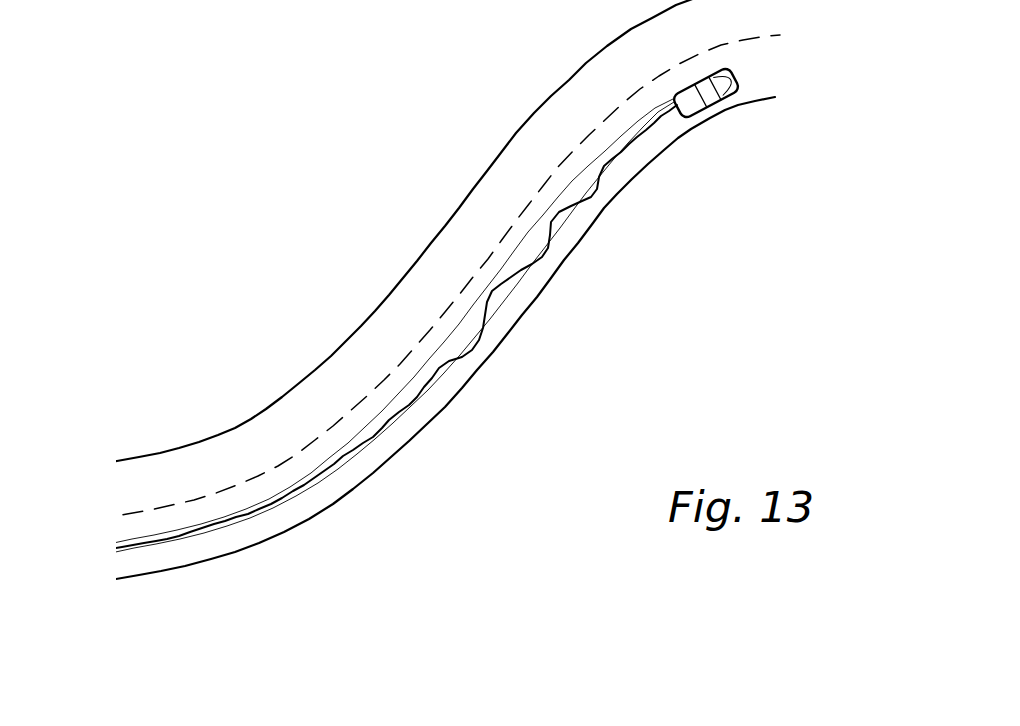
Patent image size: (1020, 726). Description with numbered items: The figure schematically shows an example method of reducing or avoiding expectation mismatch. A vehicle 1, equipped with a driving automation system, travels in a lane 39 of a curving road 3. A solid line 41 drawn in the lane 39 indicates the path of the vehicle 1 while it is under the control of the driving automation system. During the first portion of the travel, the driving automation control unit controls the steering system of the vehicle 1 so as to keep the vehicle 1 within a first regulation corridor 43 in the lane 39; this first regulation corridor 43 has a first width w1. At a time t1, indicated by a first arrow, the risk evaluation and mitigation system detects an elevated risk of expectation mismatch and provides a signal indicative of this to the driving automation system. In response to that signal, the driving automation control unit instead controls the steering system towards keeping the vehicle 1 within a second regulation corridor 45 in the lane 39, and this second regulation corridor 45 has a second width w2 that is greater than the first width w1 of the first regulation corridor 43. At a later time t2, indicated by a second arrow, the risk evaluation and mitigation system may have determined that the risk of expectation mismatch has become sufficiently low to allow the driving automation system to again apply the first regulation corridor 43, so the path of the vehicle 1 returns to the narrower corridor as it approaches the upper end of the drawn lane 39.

The vehicle 1 is at (712, 105).
The road 3 is at (577, 70).
The lane 39 is at (758, 72).
The solid line 41 is at (519, 276).
The first regulation corridor 43 is at (251, 531).
The second regulation corridor 45 is at (442, 315).
The time t1 is at (450, 378).
The time t2 is at (597, 199).
The first width w1 is at (197, 483).
The second width w2 is at (441, 339).